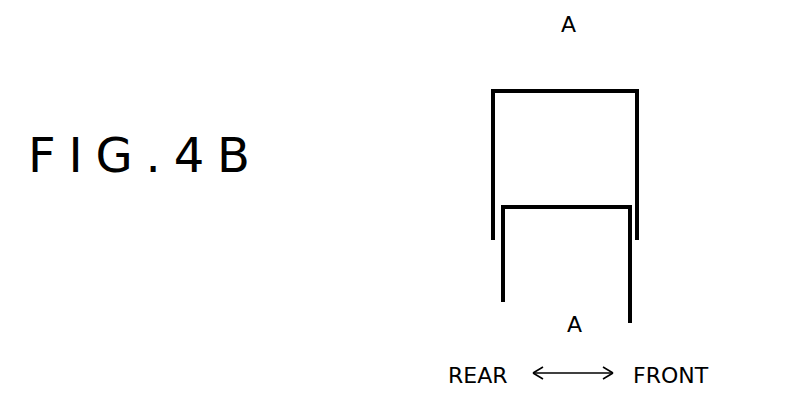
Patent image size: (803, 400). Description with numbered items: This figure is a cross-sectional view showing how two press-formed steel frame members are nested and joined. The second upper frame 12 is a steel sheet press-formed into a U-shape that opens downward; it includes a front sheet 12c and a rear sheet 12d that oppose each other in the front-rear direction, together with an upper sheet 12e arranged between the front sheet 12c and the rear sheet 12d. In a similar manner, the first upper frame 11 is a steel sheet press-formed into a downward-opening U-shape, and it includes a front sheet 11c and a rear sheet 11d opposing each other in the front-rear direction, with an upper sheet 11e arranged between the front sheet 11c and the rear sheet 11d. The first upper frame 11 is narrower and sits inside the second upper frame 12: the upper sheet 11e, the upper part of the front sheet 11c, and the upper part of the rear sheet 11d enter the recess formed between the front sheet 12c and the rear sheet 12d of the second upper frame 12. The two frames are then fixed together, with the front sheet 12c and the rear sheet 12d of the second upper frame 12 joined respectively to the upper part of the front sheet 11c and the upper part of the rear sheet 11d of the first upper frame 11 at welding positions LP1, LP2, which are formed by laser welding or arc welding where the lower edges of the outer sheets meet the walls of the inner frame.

The first upper frame 11 is at (562, 238).
The front sheet 11c is at (503, 293).
The rear sheet 11d is at (632, 290).
The upper sheet 11e is at (526, 207).
The second upper frame 12 is at (566, 140).
The front sheet 12c is at (493, 172).
The rear sheet 12d is at (640, 169).
The upper sheet 12e is at (602, 90).
The welding position LP1 is at (491, 220).
The welding position LP2 is at (641, 226).